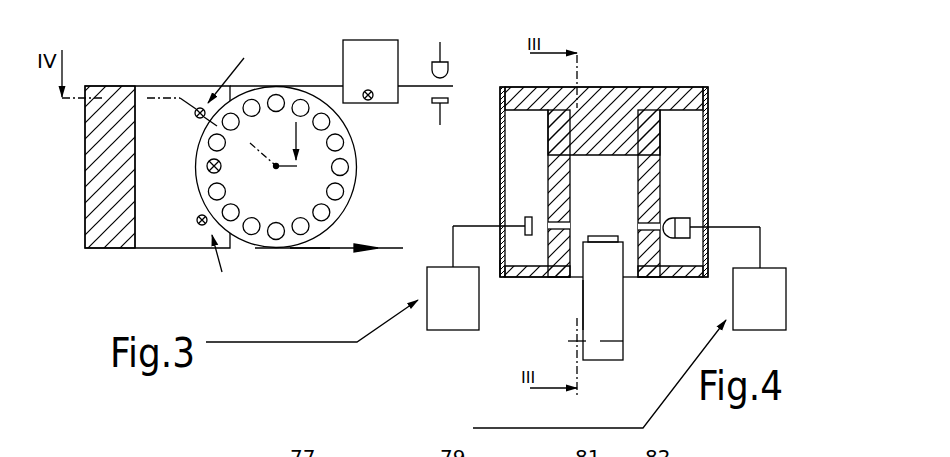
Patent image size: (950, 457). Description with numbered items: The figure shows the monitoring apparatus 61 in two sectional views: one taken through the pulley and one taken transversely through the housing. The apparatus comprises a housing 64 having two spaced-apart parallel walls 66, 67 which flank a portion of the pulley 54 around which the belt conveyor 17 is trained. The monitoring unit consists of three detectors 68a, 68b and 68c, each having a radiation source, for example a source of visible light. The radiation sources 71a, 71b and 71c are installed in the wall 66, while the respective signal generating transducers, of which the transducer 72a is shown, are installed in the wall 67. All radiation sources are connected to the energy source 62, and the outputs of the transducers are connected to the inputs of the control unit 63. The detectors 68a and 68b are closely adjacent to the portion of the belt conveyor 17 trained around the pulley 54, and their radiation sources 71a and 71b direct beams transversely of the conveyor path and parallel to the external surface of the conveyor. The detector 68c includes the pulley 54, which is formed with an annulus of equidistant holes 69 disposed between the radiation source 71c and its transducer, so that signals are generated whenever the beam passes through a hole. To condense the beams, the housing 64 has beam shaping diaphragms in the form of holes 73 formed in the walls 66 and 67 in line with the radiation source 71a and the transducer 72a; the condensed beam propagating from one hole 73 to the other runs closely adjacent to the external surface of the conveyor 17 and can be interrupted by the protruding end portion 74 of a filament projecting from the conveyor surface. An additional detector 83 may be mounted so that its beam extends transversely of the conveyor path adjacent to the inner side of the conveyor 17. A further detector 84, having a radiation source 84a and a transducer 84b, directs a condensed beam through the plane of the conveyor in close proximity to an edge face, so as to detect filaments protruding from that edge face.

In FIG. 3, the belt conveyor 17 is at (342, 246).
In FIG. 4, the belt conveyor 17 is at (582, 298).
In FIG. 3, the pulley 54 is at (327, 153).
In FIG. 4, the pulley 54 is at (610, 333).
In FIG. 3, the monitoring apparatus 61 is at (83, 206).
In FIG. 4, the monitoring apparatus 61 is at (740, 100).
In FIG. 4, the energy source 62 is at (775, 310).
In FIG. 4, the control unit 63 is at (427, 315).
In FIG. 3, the housing 64 is at (113, 86).
In FIG. 4, the housing 64 is at (641, 95).
In FIG. 3, the wall 66 is at (158, 86).
In FIG. 4, the wall 66 is at (685, 278).
In FIG. 4, the wall 67 is at (505, 290).
In FIG. 3, the detector 68a is at (240, 70).
In FIG. 3, the detector 68b is at (225, 266).
In FIG. 3, the detector 68c is at (207, 177).
In FIG. 3, the holes 69 is at (311, 251).
In FIG. 3, the radiation source 71a is at (200, 106).
In FIG. 4, the radiation source 71a is at (690, 226).
In FIG. 3, the radiation source 71b is at (200, 227).
In FIG. 3, the radiation source 71c is at (262, 236).
In FIG. 4, the signal generating transducer 72a is at (524, 221).
In FIG. 4, the holes 73 is at (548, 208).
In FIG. 4, the protruding end portion 74 is at (600, 235).
In FIG. 3, the additional detector 83 is at (360, 92).
In FIG. 3, the additional detector 84 is at (428, 97).
In FIG. 3, the radiation source 84a is at (432, 62).
In FIG. 3, the transducer 84b is at (448, 105).